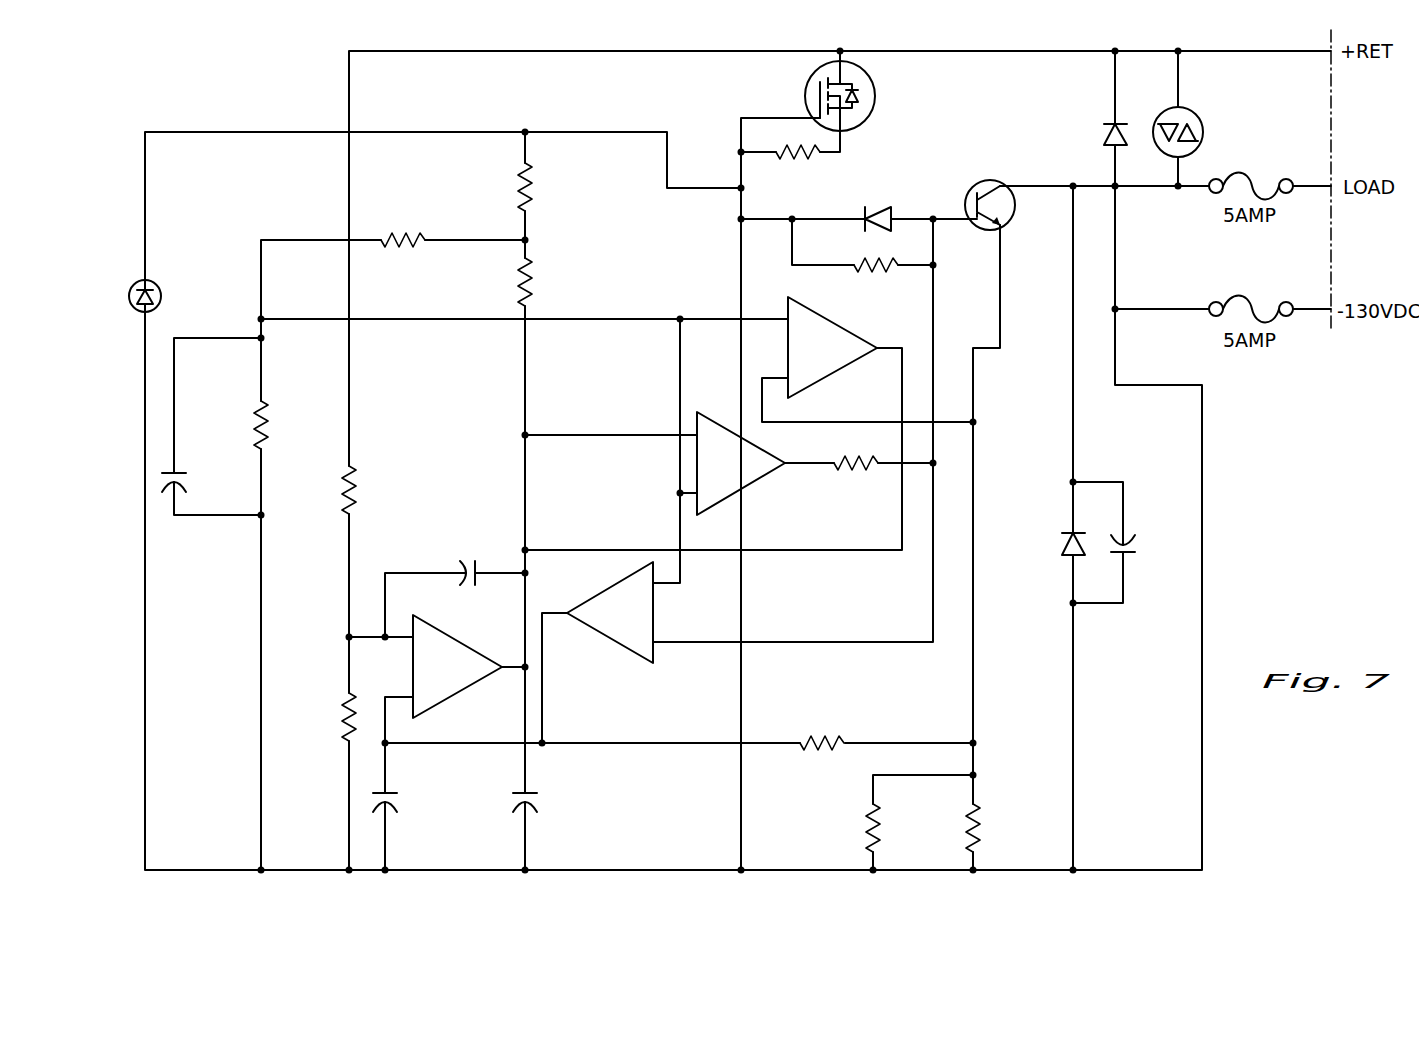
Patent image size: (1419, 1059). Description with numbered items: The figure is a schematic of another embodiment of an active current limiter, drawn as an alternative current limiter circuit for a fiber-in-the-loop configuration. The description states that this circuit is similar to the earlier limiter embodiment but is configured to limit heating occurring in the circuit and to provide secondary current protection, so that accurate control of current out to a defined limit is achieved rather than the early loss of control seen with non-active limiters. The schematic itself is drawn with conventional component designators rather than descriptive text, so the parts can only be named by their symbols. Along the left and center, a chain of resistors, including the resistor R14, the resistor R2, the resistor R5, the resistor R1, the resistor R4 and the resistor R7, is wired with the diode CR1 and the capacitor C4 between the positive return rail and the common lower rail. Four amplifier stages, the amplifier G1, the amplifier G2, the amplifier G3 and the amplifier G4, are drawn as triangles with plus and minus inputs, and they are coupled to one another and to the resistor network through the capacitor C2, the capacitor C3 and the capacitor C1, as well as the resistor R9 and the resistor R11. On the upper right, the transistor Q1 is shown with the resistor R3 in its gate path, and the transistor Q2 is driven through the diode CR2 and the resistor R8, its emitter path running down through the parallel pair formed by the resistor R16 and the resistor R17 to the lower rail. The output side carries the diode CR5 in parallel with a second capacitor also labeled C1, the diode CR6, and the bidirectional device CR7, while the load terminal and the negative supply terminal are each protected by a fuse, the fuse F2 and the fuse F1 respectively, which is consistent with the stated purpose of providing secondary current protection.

The zener diode CR1 is at (166, 296).
The resistor 302K R14 is at (556, 188).
The resistor 2Meg R2 is at (557, 282).
The resistor 182K R5 is at (406, 269).
The resistor 88.7K R1 is at (292, 424).
The resistor 649K R4 is at (319, 491).
The capacitor 0.1UF C4 is at (206, 484).
The capacitor 16PF C2 is at (473, 552).
The amplifier G1 is at (457, 666).
The amplifier G2 is at (610, 612).
The amplifier G3 is at (741, 463).
The amplifier G4 is at (832, 347).
The resistor 1.02K R7 is at (314, 717).
The capacitor 0.1UF C3 is at (416, 803).
The capacitor C1 is at (852, 678).
The resistor 2.74K R3 is at (798, 167).
The MOSFET transistor Q1 is at (856, 96).
The diode CR2 is at (893, 205).
The resistor 76K R8 is at (876, 294).
The transistor Q2 is at (1004, 213).
The resistor 1K R11 is at (856, 492).
The resistor 100K R9 is at (824, 774).
The resistor 0.47 R16 is at (900, 828).
The resistor 0.47 R17 is at (1001, 828).
The diode CR5 is at (1050, 547).
The diode CR6 is at (1092, 135).
The triac CR7 is at (1196, 125).
The fuse 5AMP F2 is at (1251, 175).
The fuse 5AMP F1 is at (1251, 297).